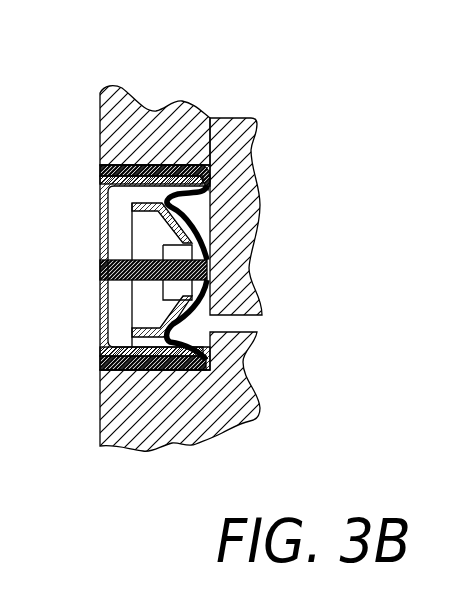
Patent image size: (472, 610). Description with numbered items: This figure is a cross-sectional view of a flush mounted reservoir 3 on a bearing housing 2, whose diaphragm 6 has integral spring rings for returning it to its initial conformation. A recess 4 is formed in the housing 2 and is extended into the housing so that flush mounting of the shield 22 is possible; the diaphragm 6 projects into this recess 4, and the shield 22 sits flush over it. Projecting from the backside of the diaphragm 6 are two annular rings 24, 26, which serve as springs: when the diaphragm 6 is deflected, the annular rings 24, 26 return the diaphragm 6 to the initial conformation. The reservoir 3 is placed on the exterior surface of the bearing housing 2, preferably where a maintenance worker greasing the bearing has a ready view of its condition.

The reservoir 3 is at (61, 87).
The bearing housing 2 is at (146, 111).
The recess 4 is at (193, 214).
The diaphragm 6 is at (100, 386).
The shield 22 is at (100, 223).
The annular ring 24 is at (132, 333).
The annular ring 26 is at (165, 306).